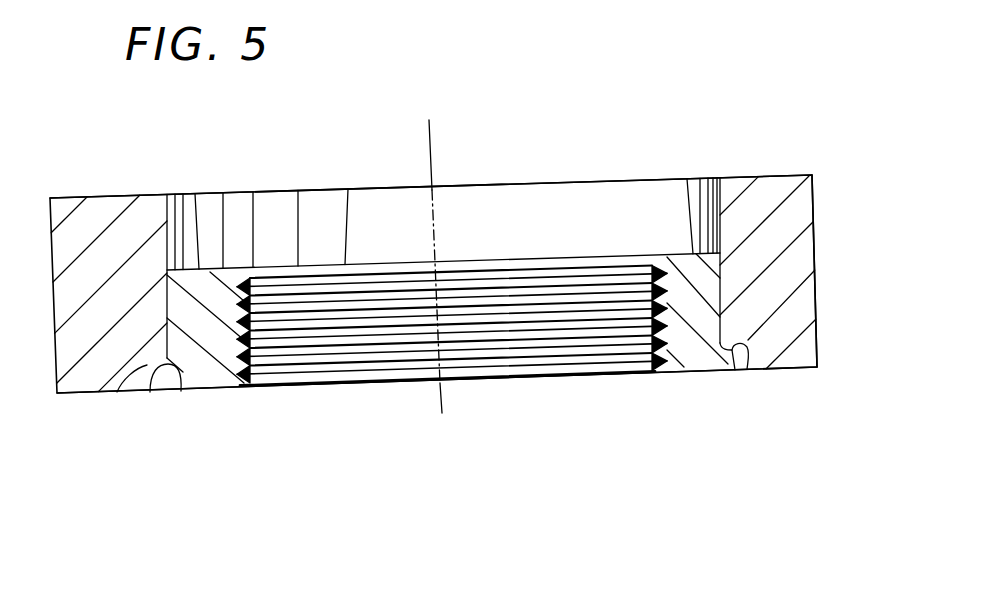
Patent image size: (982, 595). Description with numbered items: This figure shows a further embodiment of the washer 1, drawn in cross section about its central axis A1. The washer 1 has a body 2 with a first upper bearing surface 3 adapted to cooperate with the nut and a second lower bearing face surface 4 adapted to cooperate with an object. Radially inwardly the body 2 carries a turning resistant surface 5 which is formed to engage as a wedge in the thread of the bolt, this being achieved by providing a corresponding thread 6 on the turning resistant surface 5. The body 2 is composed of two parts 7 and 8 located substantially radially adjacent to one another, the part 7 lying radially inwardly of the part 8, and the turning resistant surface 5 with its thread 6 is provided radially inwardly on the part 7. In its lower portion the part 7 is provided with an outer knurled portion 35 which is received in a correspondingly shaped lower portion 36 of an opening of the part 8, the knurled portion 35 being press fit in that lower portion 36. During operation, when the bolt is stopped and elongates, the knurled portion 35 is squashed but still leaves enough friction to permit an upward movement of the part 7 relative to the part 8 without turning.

The washer 1 is at (38, 175).
The axis A1 is at (431, 153).
The body 2 is at (857, 109).
The first upper bearing surface 3 is at (738, 174).
The second lower bearing face surface 4 is at (782, 372).
The turning resistant surface 5 is at (650, 377).
The thread 6 is at (268, 383).
The part 7 is at (697, 352).
The part 8 is at (879, 287).
The outer knurled portion 35 is at (163, 380).
The lower portion of an opening 36 is at (117, 393).